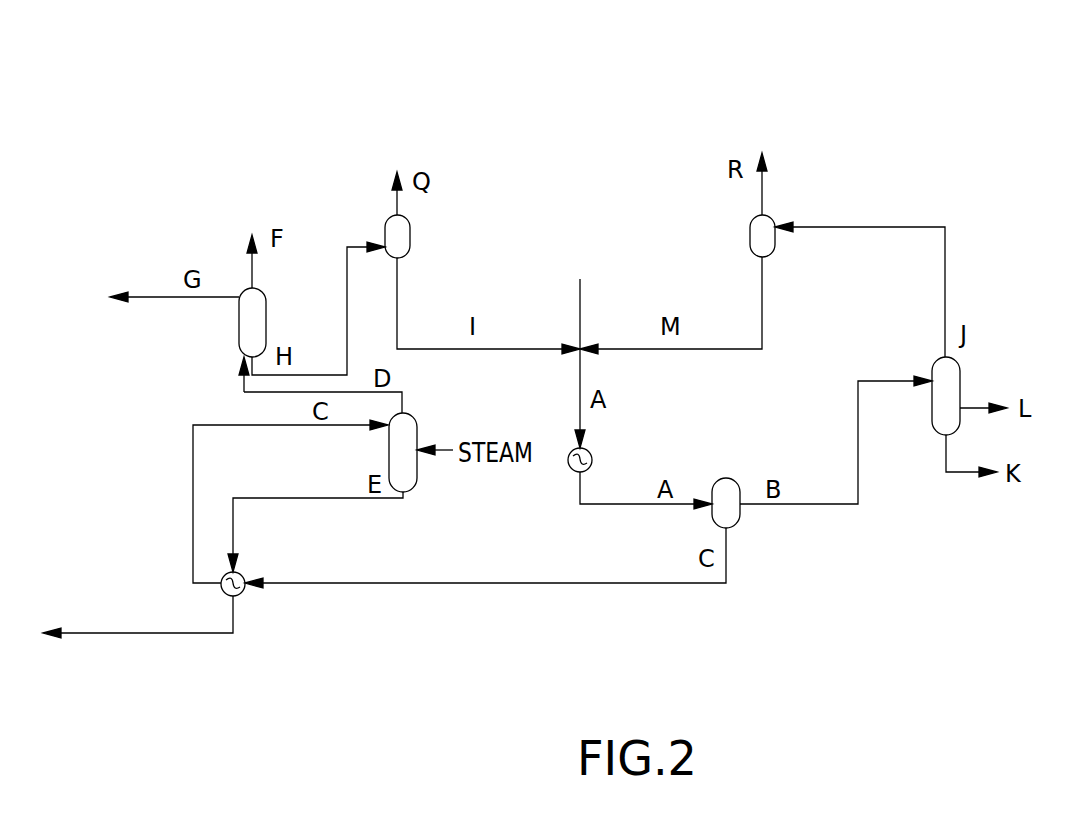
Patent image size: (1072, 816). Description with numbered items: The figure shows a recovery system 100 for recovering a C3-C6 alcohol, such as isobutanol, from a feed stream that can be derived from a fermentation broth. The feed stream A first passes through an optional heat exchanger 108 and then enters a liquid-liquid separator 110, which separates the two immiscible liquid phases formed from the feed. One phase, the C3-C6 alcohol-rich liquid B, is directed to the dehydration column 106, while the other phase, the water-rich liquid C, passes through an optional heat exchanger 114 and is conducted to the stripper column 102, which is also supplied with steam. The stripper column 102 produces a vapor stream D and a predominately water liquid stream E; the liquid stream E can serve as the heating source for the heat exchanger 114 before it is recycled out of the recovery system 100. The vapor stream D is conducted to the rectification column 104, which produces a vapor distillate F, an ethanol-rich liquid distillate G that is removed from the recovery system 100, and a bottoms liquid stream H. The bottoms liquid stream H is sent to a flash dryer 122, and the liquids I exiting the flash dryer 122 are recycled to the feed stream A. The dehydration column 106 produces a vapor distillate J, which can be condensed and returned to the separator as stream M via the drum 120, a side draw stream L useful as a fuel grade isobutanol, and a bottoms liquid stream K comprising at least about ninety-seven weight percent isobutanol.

The recovery system 100 is at (968, 72).
The stripper column 102 is at (389, 440).
The rectification column 104 is at (266, 320).
The dehydration column 106 is at (932, 410).
The heat exchanger 108 is at (592, 458).
The liquid-liquid separator 110 is at (734, 480).
The heat exchanger 114 is at (243, 595).
The separator 120 is at (771, 219).
The flash dryer 122 is at (410, 245).